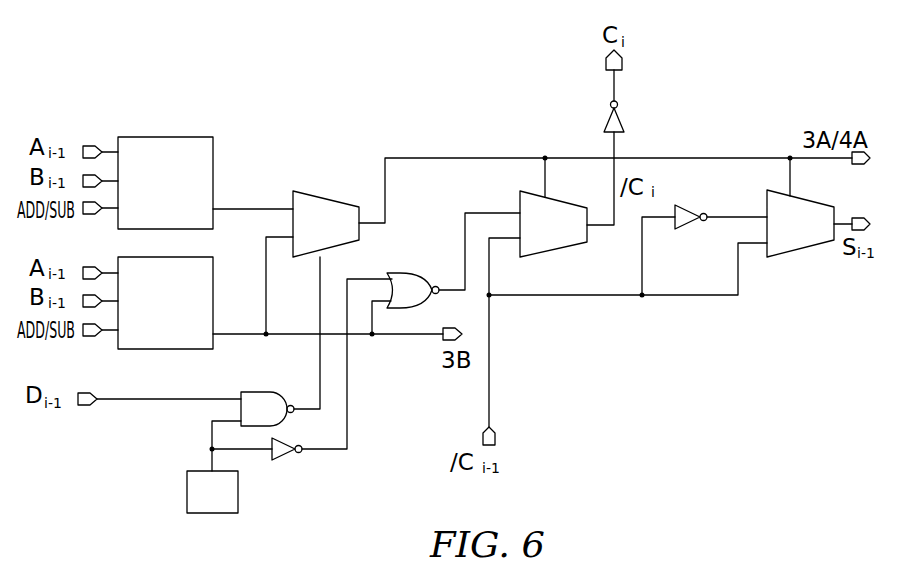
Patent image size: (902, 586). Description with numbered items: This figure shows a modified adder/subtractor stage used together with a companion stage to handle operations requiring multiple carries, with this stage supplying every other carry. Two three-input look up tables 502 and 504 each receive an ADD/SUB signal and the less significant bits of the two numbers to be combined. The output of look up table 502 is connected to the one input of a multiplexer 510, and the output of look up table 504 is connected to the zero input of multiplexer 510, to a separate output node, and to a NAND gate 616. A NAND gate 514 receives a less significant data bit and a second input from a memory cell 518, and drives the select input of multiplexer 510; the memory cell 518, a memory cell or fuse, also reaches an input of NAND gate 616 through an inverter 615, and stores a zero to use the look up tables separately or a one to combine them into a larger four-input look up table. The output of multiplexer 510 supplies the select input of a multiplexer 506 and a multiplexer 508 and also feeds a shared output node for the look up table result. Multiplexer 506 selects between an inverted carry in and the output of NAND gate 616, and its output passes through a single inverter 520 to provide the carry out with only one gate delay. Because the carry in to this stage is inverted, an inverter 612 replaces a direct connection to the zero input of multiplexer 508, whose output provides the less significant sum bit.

The look up table 502 is at (190, 137).
The look up table 504 is at (197, 257).
The multiplexer 506 is at (550, 250).
The multiplexer 508 is at (803, 249).
The multiplexer 510 is at (307, 192).
The NAND gate 514 is at (252, 392).
The memory cell 518 is at (212, 513).
The inverter 520 is at (626, 120).
The inverter 612 is at (689, 203).
The inverter 615 is at (288, 454).
The NAND gate 616 is at (393, 273).